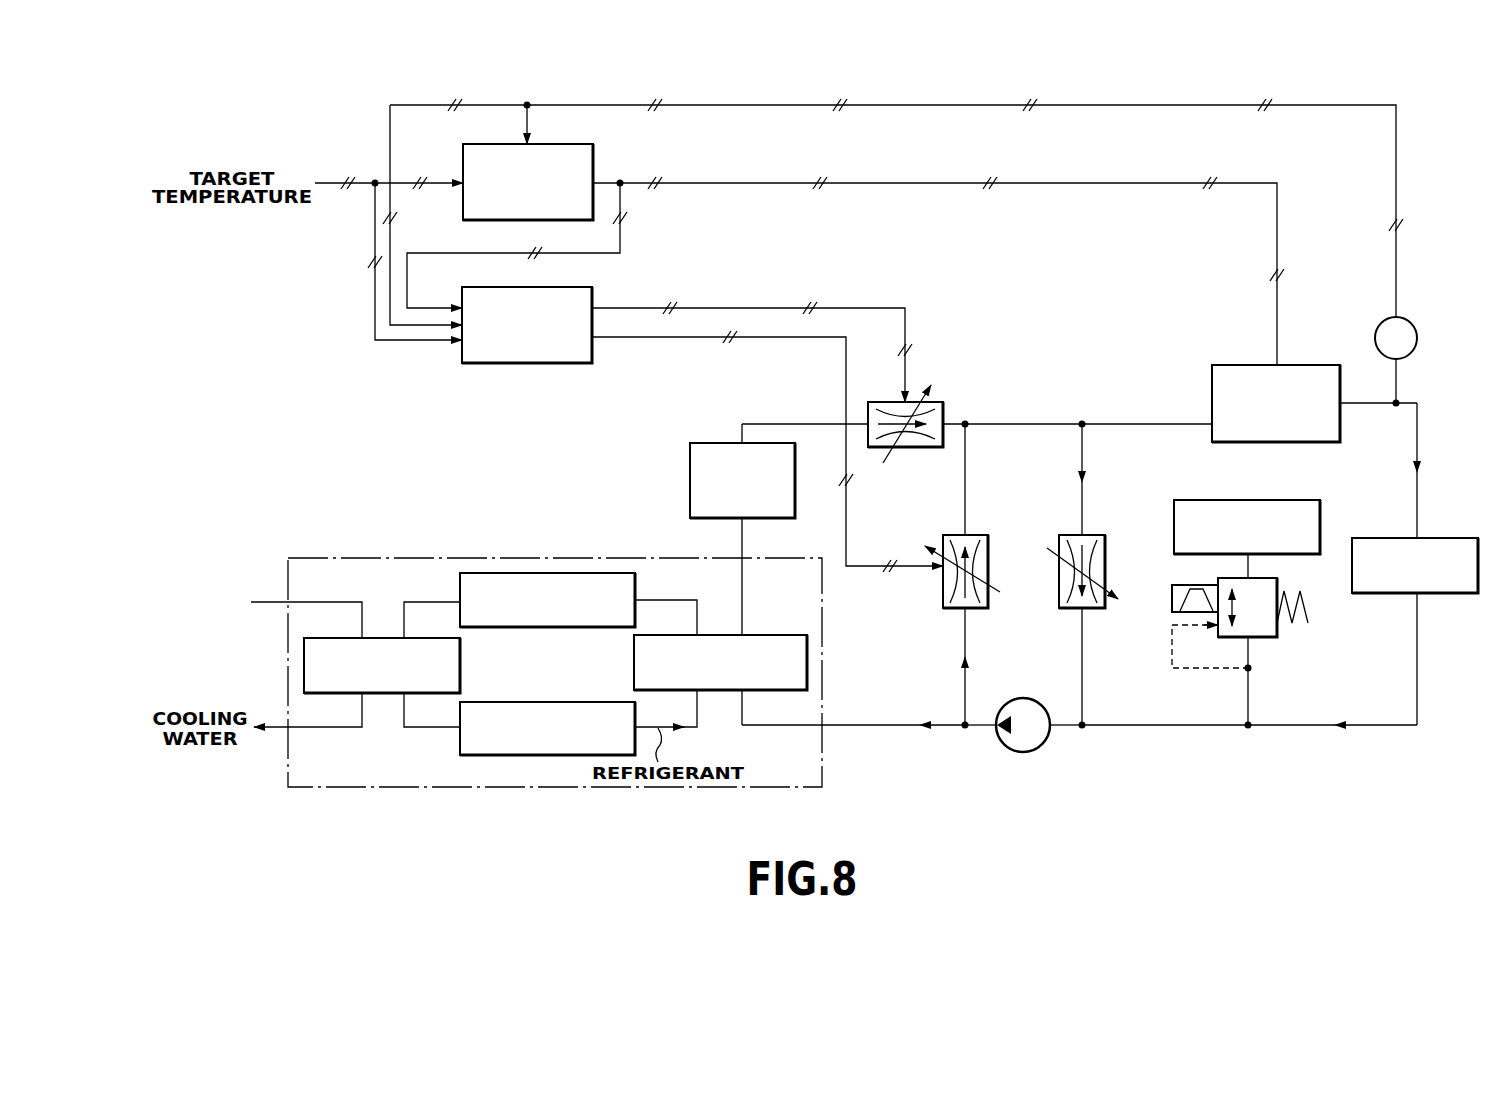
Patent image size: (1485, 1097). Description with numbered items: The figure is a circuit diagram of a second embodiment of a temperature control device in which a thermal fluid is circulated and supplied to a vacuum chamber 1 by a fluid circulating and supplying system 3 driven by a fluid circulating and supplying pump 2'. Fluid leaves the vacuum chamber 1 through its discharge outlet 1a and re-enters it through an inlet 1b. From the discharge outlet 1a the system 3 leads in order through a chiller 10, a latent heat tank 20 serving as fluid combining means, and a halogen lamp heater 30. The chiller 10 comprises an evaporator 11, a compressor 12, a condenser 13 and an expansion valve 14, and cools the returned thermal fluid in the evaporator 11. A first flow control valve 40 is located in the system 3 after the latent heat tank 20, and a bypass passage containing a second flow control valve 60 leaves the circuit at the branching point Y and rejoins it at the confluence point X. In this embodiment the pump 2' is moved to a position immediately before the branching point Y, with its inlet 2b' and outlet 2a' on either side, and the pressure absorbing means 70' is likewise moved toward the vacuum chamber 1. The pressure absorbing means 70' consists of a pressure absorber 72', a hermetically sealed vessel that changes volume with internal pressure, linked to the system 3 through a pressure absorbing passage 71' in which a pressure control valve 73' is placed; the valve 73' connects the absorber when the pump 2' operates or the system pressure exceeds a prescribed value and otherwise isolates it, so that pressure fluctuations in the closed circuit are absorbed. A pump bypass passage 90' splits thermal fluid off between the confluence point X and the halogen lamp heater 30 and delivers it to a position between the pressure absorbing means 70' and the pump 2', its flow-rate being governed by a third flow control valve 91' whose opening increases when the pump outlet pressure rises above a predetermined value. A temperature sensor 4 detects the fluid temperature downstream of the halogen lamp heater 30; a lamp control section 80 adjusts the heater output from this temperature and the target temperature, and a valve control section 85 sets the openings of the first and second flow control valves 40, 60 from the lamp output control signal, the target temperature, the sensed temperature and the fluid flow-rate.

The vacuum chamber 1 is at (1383, 538).
The discharge outlet of the vacuum chamber 1a is at (1419, 612).
The inlet pipe of vacuum chamber 1b is at (1419, 530).
The fluid circulating and supplying pump 2' is at (1023, 702).
The outlet of the fluid circulating and supplying pump 2a' is at (981, 756).
The inlet of the fluid circulating and supplying pump 2b' is at (1067, 756).
The fluid circulating and supplying system 3 is at (1223, 736).
The temperature sensor 4 is at (1412, 325).
The chiller 10 is at (403, 558).
The evaporator 11 is at (780, 635).
The compressor 12 is at (517, 627).
The condenser 13 is at (383, 638).
The expansion valve 14 is at (577, 702).
The latent heat tank 20 is at (690, 483).
The halogen lamp heater 30 is at (1232, 365).
The first flow control valve 40 is at (912, 447).
The second flow control valve 60 is at (988, 550).
The pressure absorbing means 70' is at (1205, 550).
The pressure absorbing passage 71' is at (1280, 681).
The pressure absorber 72' is at (1247, 501).
The pressure control valve 73' is at (1271, 613).
The lamp control section 80 is at (595, 149).
The valve control section 85 is at (592, 291).
The pump bypass passage 90' is at (1114, 666).
The third flow control valve 91' is at (1097, 556).
The confluence point of the bypass passage X is at (967, 428).
The branching point of the bypass passage Y is at (962, 720).